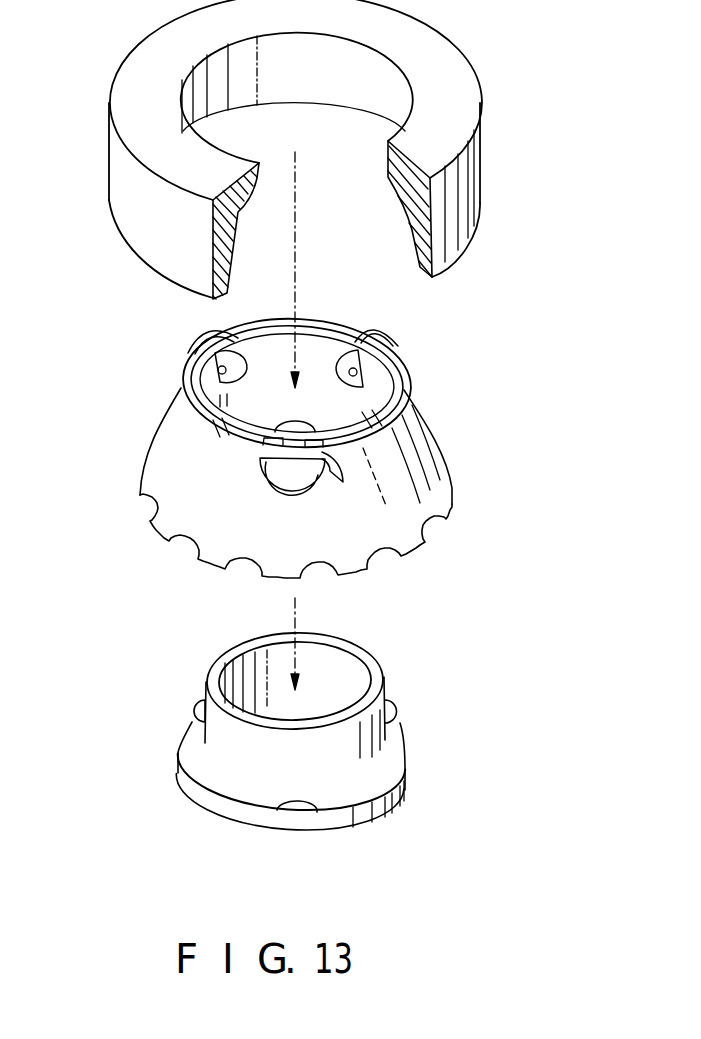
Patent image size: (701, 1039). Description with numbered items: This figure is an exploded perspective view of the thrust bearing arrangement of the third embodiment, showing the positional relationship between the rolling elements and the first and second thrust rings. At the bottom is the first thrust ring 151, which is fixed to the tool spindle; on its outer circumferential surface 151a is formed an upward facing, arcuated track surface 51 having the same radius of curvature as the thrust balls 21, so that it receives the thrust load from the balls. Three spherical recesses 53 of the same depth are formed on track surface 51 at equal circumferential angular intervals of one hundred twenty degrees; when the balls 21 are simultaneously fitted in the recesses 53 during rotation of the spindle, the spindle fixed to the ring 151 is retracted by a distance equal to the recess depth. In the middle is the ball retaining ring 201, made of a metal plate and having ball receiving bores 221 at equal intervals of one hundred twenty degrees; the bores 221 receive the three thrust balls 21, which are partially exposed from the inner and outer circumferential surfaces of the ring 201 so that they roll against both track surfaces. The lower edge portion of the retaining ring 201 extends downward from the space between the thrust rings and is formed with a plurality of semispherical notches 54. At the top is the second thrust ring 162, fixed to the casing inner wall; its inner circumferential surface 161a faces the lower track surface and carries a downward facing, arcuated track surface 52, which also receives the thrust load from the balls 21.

The annular ring member 162 is at (333, 149).
The inner circumferential surface 161a is at (303, 92).
The track surface 52 is at (402, 192).
The ball retaining ring 201 is at (297, 464).
The thrust ball 21 is at (188, 338).
The ball receiving bores 221 is at (195, 408).
The semispherical notches 54 is at (150, 517).
The first thrust ring 151 is at (294, 753).
The outer circumferential surface 151a is at (227, 752).
The track surface 51 is at (370, 780).
The spherical recesses 53 is at (194, 705).